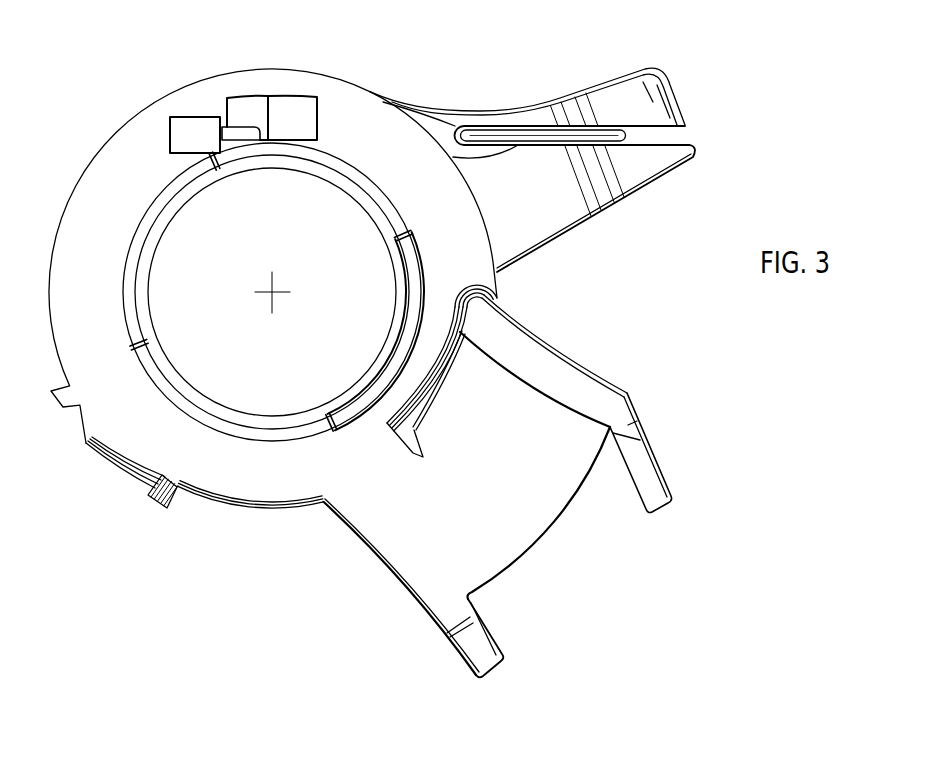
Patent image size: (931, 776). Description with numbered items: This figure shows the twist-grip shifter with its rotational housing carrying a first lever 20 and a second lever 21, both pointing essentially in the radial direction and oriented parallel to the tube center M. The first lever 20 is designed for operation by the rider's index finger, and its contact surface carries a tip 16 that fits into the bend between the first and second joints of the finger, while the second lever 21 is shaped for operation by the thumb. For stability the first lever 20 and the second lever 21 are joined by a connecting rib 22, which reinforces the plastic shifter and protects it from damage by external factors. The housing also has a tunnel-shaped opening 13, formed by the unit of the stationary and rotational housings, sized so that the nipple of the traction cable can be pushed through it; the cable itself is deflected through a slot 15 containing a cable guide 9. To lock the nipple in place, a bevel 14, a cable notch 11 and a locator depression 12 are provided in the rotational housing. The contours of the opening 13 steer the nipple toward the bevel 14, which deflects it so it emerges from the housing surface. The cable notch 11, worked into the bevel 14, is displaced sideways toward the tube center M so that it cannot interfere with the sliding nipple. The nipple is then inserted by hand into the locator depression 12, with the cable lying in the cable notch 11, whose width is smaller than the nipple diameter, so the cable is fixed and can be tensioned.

The cable guide 9 is at (537, 132).
The cable notch 11 is at (245, 133).
The locator depression 12 is at (193, 128).
The tunnel-shaped opening 13 is at (293, 108).
The bevel 14 is at (257, 100).
The slot 15 is at (682, 140).
The tip 16 is at (630, 392).
The first lever 20 is at (643, 473).
The second lever 21 is at (487, 643).
The connecting rib 22 is at (543, 520).
The tube center M is at (281, 297).